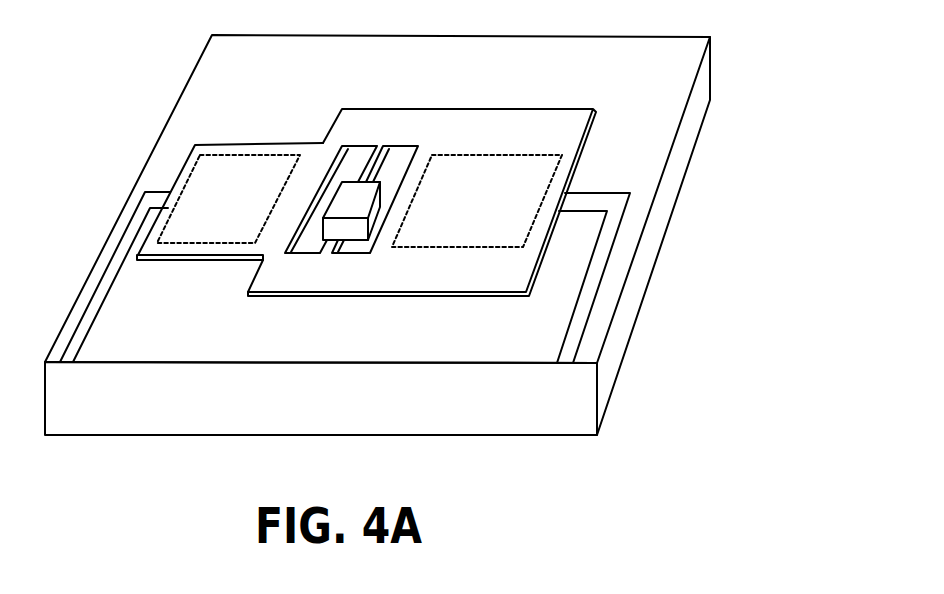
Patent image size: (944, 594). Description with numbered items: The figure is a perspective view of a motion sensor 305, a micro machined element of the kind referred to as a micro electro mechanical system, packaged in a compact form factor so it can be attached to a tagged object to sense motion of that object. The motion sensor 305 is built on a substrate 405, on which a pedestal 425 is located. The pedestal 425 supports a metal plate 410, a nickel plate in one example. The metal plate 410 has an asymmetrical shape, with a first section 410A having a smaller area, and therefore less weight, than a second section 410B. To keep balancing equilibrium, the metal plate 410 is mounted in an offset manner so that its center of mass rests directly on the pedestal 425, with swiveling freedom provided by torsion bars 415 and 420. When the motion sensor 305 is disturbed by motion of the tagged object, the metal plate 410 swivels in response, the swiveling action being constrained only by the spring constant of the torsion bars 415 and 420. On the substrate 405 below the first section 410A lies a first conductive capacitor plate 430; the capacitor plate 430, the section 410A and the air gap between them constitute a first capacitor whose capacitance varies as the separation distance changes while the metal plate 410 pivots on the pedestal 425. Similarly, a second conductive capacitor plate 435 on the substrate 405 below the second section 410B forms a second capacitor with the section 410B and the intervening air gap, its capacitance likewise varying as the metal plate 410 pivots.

The motion sensor 305 is at (752, 273).
The substrate 405 is at (582, 395).
The metal plate 410 is at (575, 138).
The first section 410A is at (243, 290).
The second section 410B is at (523, 305).
The torsion bar 415 is at (385, 157).
The torsion bar 420 is at (341, 243).
The pedestal 425 is at (375, 218).
The first conductive capacitor plate 430 is at (240, 182).
The second conductive capacitor plate 435 is at (510, 197).